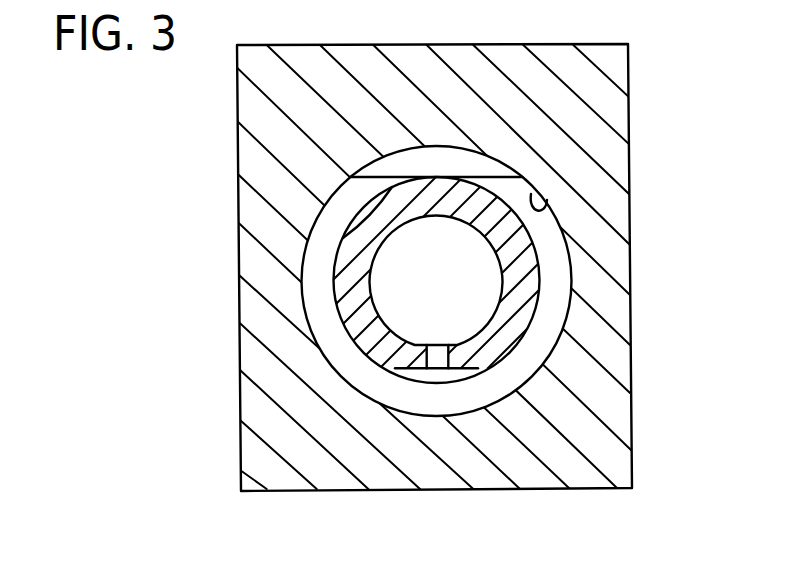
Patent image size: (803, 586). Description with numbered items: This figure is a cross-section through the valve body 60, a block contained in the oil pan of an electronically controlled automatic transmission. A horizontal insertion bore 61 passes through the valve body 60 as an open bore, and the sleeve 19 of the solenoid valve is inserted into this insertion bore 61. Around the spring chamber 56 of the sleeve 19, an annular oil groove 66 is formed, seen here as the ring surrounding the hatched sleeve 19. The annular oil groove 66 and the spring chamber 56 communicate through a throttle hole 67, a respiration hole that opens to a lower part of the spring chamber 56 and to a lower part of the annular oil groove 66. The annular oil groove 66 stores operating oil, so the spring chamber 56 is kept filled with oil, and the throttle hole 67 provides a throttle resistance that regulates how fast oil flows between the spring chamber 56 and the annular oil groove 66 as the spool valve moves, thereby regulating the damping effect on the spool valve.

The valve body 60 is at (607, 107).
The insertion bore 61 is at (547, 200).
The sleeve 19 is at (513, 230).
The annular oil groove 66 is at (548, 303).
The spring chamber 56 is at (471, 310).
The throttle hole 67 is at (448, 357).